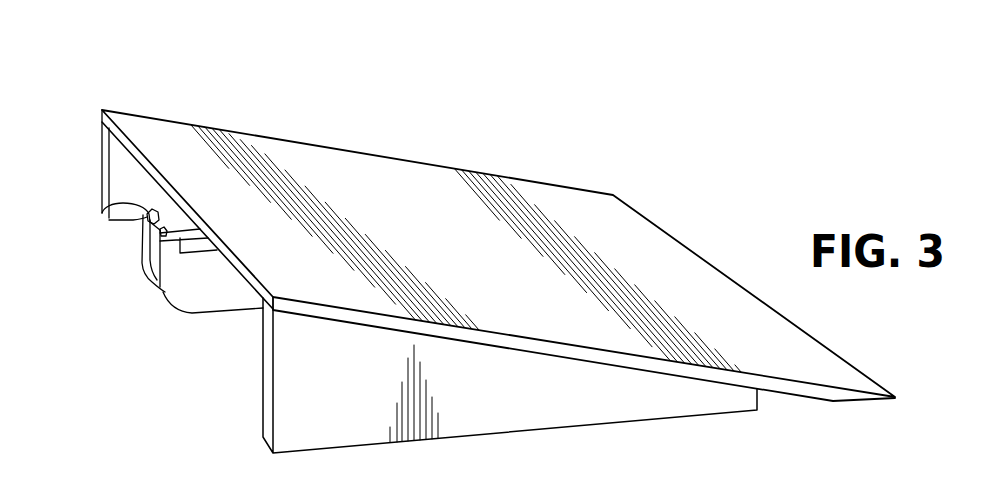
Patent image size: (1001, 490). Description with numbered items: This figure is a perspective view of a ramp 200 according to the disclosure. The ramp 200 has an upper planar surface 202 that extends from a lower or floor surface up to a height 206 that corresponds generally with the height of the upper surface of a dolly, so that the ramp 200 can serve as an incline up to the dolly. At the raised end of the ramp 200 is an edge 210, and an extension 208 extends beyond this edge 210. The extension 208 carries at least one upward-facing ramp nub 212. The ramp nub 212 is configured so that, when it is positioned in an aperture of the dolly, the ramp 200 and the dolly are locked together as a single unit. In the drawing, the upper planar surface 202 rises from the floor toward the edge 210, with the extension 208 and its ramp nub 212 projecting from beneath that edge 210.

The ramp 200 is at (619, 91).
The upper planar surface 202 is at (400, 187).
The height 206 is at (127, 146).
The extension 208 is at (197, 300).
The edge 210 is at (100, 118).
The ramp nub 212 is at (150, 229).